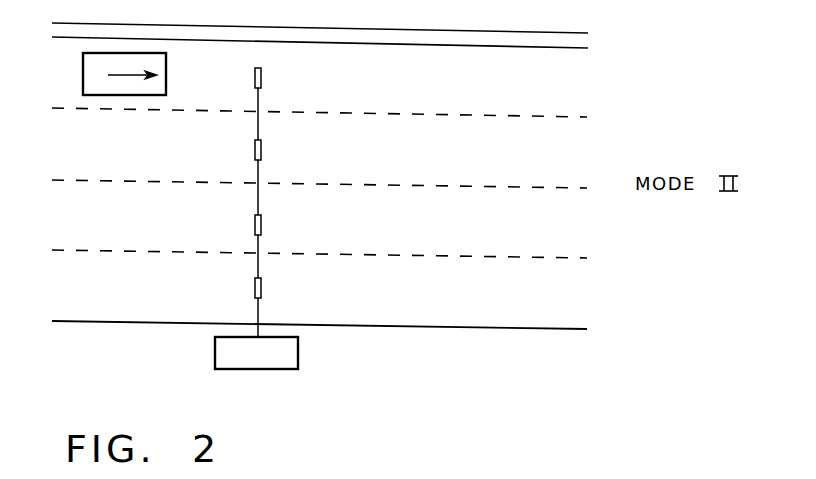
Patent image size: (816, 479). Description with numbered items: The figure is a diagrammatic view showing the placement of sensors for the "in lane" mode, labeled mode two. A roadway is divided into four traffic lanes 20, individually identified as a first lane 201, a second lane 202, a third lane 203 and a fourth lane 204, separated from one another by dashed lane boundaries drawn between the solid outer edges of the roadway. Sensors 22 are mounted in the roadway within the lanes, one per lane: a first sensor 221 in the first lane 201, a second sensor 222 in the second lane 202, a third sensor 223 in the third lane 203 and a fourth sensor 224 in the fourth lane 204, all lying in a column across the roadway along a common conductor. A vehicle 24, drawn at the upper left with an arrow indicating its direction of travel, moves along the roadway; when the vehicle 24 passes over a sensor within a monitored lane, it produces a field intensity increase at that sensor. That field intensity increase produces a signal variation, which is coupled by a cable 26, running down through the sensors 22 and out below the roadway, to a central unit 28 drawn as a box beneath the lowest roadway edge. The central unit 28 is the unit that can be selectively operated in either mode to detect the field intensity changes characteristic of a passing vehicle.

The traffic lanes 20 is at (319, 188).
The first lane 201 is at (521, 91).
The second lane 202 is at (521, 162).
The third lane 203 is at (521, 231).
The fourth lane 204 is at (521, 297).
The sensors 22 is at (284, 186).
The first sensor 221 is at (262, 77).
The second sensor 222 is at (268, 149).
The third sensor 223 is at (262, 229).
The fourth sensor 224 is at (262, 289).
The vehicle 24 is at (83, 71).
The cable 26 is at (257, 308).
The central unit 28 is at (298, 358).